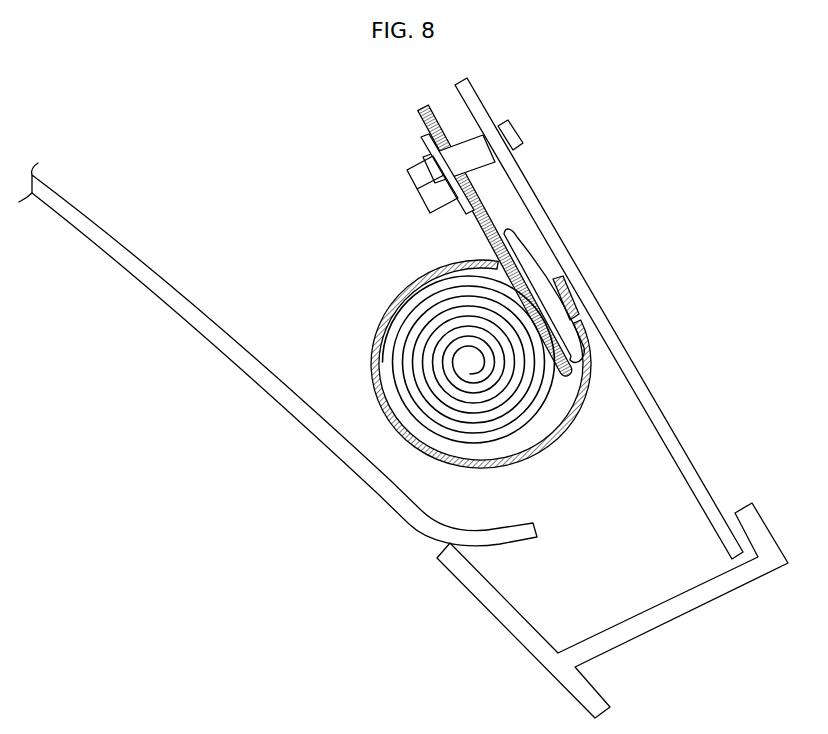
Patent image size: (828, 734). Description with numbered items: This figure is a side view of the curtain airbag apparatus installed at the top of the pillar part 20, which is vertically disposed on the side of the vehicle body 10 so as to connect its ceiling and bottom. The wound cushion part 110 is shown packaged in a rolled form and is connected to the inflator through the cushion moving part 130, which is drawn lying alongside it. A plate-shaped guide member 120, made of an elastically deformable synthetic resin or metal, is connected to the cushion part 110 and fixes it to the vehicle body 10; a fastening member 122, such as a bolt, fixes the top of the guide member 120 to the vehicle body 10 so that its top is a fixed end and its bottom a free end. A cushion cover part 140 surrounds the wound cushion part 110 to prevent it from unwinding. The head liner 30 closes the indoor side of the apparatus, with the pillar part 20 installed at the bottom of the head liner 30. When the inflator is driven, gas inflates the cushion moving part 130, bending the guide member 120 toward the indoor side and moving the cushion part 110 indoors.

The vehicle body 10 is at (580, 281).
The pillar part 20 is at (500, 612).
The head liner 30 is at (252, 362).
The cushion part 110 is at (418, 384).
The guide member 120 is at (490, 206).
The fastening member 122 is at (420, 171).
The cushion moving part 130 is at (547, 258).
The cushion cover part 140 is at (588, 372).